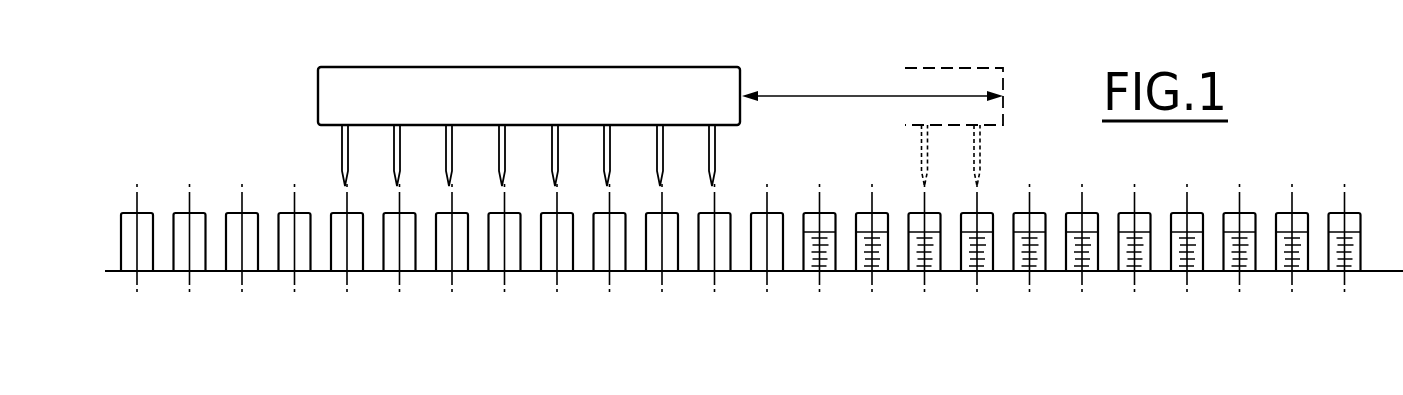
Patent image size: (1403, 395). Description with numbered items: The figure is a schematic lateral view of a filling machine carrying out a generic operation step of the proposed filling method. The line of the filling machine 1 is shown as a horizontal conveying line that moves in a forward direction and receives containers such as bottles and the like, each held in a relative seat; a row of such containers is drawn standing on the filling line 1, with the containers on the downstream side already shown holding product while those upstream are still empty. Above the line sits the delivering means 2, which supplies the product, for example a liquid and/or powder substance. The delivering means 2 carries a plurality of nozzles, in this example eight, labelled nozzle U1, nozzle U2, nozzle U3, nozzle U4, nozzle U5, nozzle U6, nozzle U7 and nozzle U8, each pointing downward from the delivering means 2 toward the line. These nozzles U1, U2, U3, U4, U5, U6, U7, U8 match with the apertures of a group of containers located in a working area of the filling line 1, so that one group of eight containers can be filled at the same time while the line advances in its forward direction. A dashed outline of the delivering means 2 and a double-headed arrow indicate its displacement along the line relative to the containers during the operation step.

The line of a filling machine 1 is at (1388, 272).
The delivering means 2 is at (750, 62).
The nozzle U1 is at (710, 134).
The nozzle U2 is at (658, 134).
The nozzle U3 is at (605, 134).
The nozzle U4 is at (552, 134).
The nozzle U5 is at (499, 134).
The nozzle U6 is at (446, 134).
The nozzle U7 is at (393, 134).
The nozzle U8 is at (341, 134).